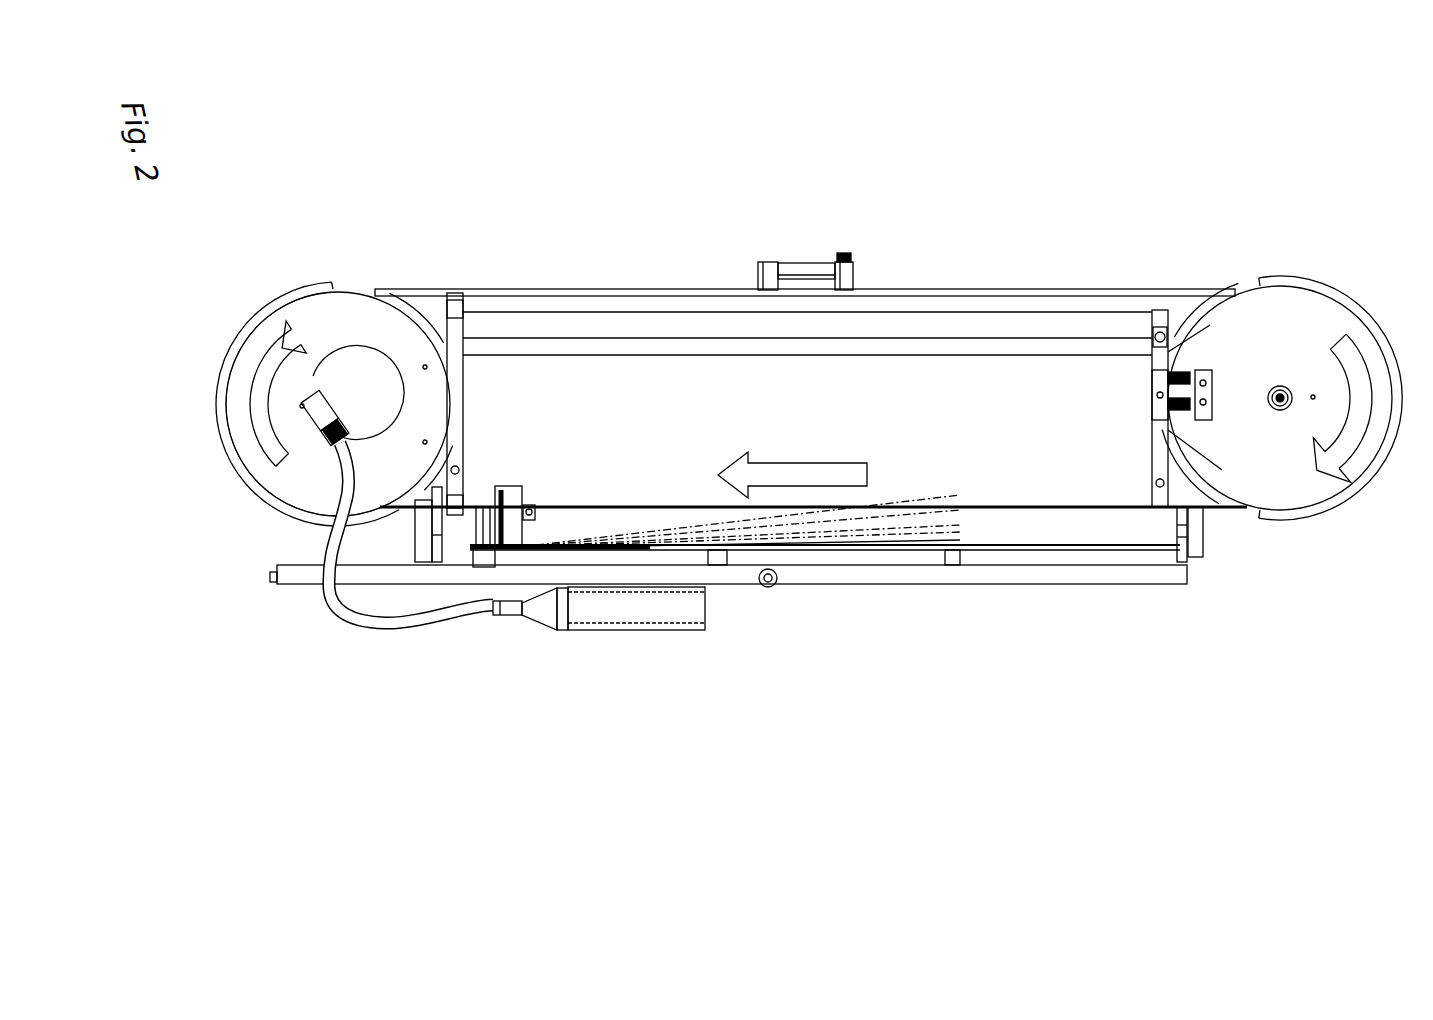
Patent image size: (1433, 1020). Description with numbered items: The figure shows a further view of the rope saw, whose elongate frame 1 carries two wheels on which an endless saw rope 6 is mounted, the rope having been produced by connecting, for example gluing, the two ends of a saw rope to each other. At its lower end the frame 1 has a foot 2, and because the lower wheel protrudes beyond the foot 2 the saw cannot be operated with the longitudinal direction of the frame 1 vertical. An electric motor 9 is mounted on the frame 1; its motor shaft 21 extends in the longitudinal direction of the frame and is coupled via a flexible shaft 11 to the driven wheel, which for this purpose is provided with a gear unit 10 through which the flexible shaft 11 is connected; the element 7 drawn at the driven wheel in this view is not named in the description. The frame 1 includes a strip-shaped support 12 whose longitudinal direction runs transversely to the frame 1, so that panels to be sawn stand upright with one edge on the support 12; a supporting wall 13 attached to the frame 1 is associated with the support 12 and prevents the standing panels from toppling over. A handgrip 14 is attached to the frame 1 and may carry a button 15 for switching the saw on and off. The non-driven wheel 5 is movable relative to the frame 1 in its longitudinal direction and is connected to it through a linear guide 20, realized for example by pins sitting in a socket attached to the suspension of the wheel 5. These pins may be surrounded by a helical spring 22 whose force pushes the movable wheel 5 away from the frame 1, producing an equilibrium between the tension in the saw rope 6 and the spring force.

The frame 1 is at (1082, 290).
The foot 2 is at (280, 590).
The wheel 5 is at (1298, 325).
The saw rope 6 is at (857, 508).
The first reel 7 is at (350, 315).
The electric motor 9 is at (887, 608).
The gear unit 10 is at (352, 406).
The flexible shaft 11 is at (367, 615).
The support 12 is at (505, 490).
The supporting wall 13 is at (958, 522).
The handgrip 14 is at (795, 267).
The button 15 is at (860, 250).
The linear guide 20 is at (1172, 435).
The motor shaft 21 is at (507, 612).
The helical spring 22 is at (1183, 375).